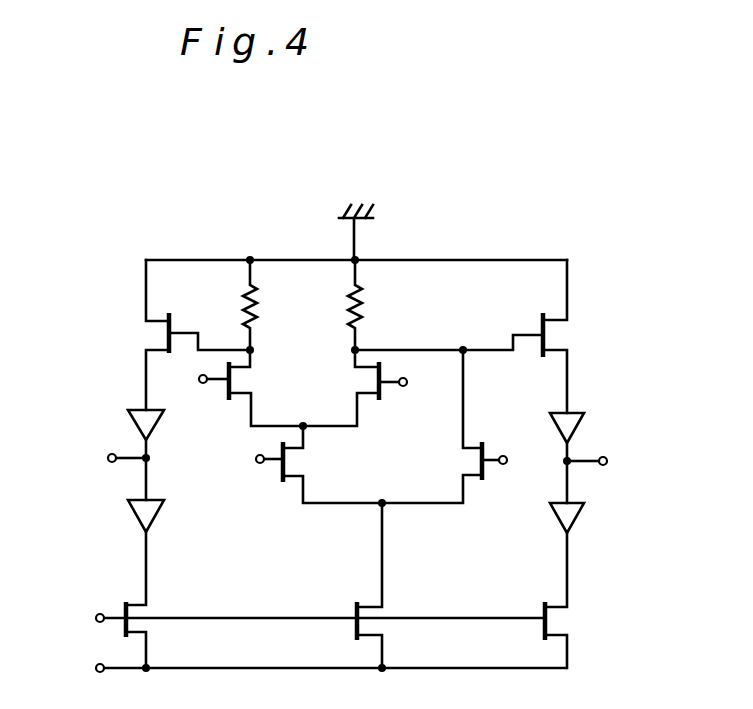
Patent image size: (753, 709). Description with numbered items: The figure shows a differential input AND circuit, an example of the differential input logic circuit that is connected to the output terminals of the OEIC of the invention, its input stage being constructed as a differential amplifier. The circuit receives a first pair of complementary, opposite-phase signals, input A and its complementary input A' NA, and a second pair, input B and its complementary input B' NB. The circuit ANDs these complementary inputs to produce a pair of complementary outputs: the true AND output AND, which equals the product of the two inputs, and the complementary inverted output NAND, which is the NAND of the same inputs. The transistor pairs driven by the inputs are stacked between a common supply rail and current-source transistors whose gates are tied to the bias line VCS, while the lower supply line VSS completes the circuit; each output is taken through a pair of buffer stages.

The input A is at (212, 395).
The complementary input A' NA is at (428, 387).
The input B is at (262, 459).
The complementary input B' NB is at (528, 450).
The complementary output OUT' NAND is at (98, 457).
The output OUT AND is at (646, 458).
The current-source bias voltage line Vcs VCS is at (298, 621).
The negative supply line Vss VSS is at (309, 671).